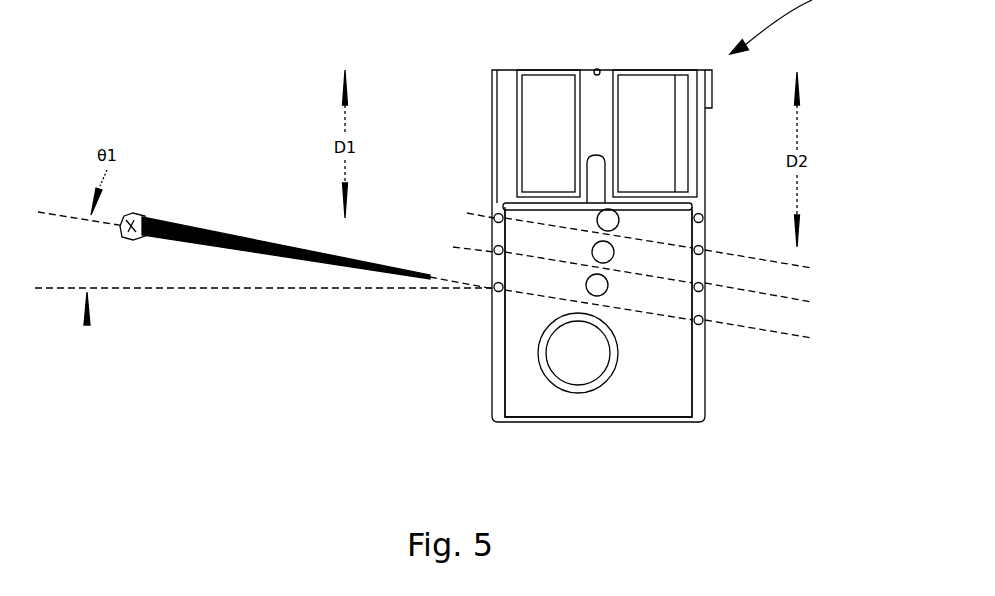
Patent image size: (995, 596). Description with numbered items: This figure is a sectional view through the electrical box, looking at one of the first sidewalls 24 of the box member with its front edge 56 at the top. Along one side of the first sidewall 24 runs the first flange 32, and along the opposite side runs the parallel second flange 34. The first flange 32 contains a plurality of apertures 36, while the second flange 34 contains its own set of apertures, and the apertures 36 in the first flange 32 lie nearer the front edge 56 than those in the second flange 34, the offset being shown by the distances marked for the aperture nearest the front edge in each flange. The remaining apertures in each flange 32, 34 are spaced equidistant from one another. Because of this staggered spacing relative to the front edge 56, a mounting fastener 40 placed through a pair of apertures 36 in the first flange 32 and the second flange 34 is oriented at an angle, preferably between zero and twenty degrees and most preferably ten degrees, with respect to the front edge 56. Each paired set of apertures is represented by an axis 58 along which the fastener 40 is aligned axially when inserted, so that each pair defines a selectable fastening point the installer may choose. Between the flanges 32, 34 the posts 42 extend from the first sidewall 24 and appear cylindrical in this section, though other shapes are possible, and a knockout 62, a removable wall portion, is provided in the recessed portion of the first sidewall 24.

The first sidewall 24 is at (648, 364).
The first flange 32 is at (491, 390).
The second flange 34 is at (705, 283).
The apertures in the first flange 36 is at (494, 250).
The mounting fastener 40 is at (233, 232).
The posts 42 is at (608, 220).
The front edge 56 is at (597, 68).
The axes 58 is at (800, 336).
The knockout 62 is at (569, 363).